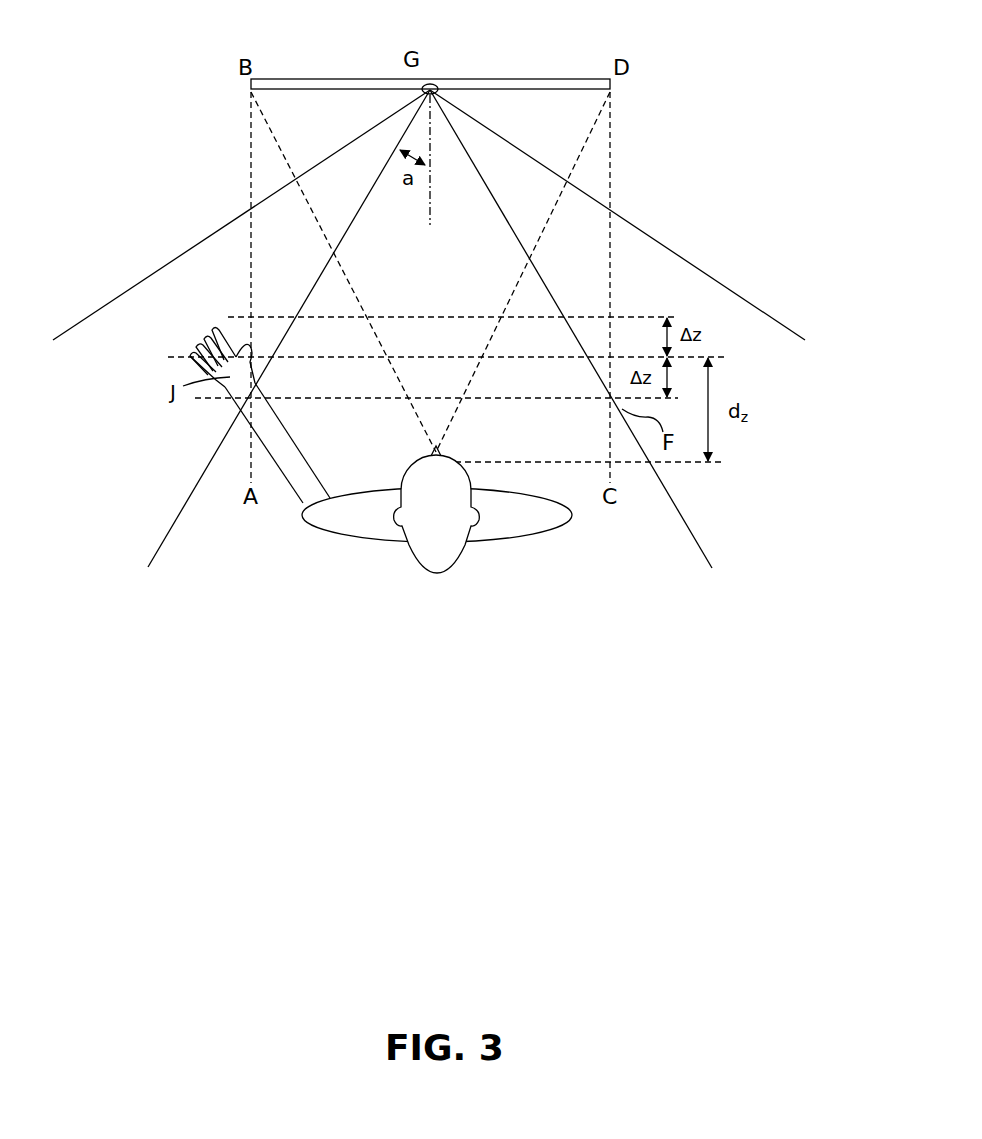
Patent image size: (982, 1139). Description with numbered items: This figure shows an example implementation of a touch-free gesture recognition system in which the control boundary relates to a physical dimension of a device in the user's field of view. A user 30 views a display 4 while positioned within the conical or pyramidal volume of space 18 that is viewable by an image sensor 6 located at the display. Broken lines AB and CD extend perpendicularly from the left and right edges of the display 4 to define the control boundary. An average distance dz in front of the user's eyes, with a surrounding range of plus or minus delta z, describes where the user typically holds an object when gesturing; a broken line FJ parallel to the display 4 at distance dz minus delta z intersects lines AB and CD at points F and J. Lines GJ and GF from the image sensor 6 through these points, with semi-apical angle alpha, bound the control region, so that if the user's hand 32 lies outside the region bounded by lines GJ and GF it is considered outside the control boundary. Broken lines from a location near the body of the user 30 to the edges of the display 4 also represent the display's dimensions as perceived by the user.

The display 4 is at (544, 82).
The image sensor 6 is at (433, 83).
The conical or pyramidal volume of space 18 is at (165, 258).
The user 30 is at (540, 533).
The hand 32 is at (218, 385).